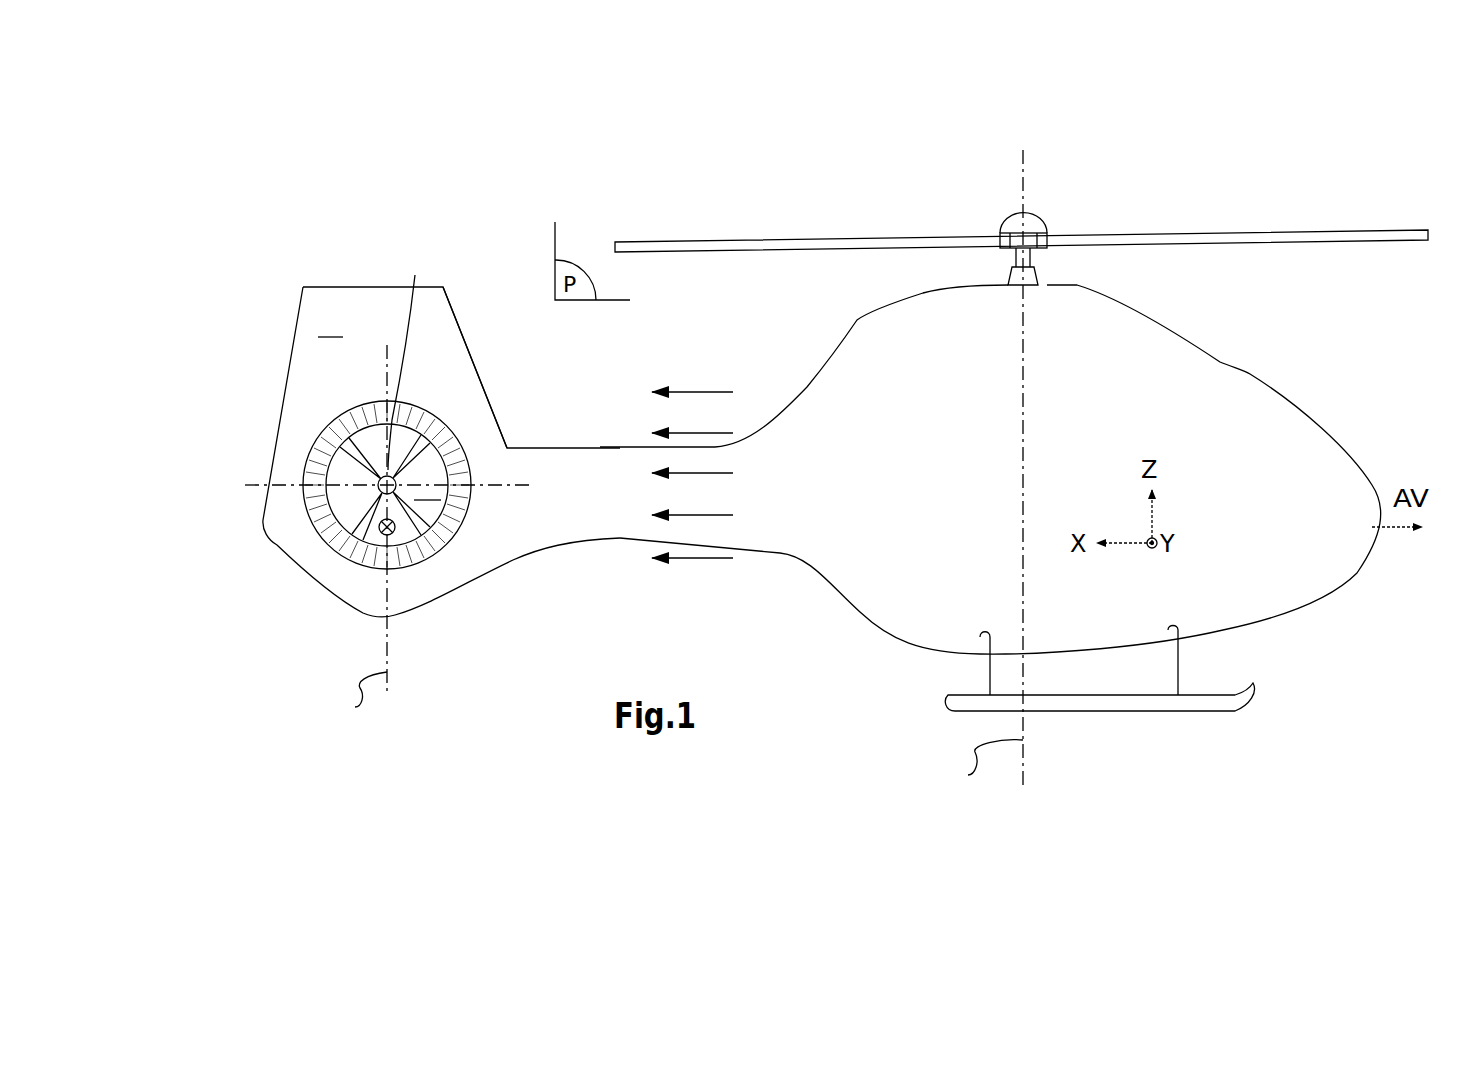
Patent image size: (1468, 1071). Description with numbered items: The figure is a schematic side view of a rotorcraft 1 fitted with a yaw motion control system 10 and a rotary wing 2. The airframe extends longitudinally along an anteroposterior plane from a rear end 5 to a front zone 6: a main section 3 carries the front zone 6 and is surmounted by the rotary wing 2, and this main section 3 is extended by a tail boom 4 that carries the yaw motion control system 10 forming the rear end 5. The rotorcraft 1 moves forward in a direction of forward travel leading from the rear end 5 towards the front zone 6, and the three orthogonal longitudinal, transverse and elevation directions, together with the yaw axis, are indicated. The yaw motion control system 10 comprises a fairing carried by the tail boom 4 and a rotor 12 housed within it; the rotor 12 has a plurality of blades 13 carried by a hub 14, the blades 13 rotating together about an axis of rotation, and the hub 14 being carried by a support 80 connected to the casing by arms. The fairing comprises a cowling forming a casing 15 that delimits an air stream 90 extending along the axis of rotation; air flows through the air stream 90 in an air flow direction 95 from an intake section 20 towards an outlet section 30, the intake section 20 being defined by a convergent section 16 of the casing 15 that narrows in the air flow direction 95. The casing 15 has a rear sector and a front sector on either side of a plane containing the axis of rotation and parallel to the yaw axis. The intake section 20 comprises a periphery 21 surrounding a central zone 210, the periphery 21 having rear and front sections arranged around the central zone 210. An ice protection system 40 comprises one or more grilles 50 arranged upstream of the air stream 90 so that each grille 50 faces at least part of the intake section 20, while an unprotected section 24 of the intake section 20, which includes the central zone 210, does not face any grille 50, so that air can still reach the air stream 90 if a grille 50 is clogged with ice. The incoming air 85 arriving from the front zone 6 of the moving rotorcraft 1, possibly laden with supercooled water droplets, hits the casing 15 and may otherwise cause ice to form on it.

The rotorcraft 1 is at (1014, 474).
The rotary wing 2 is at (1046, 188).
The main section 3 is at (845, 603).
The tail boom 4 is at (626, 460).
The rear end 5 is at (263, 520).
The front zone 6 is at (1293, 622).
The yaw motion control system 10 is at (370, 487).
The rotor 12 is at (447, 412).
The blades 13 is at (347, 450).
The hub 14 is at (325, 477).
The casing 15 is at (465, 518).
The convergent section 16 is at (282, 518).
The intake section 20 is at (365, 508).
The periphery 21 is at (447, 440).
The unprotected section 24 is at (433, 473).
The outlet section 30 is at (497, 401).
The ice protection system 40 is at (405, 587).
The grille 50 is at (462, 470).
The stator / support 80 is at (375, 435).
The air 85 is at (697, 392).
The air stream 90 is at (372, 430).
The air flow direction 95 is at (380, 530).
The central zone 210 is at (343, 460).